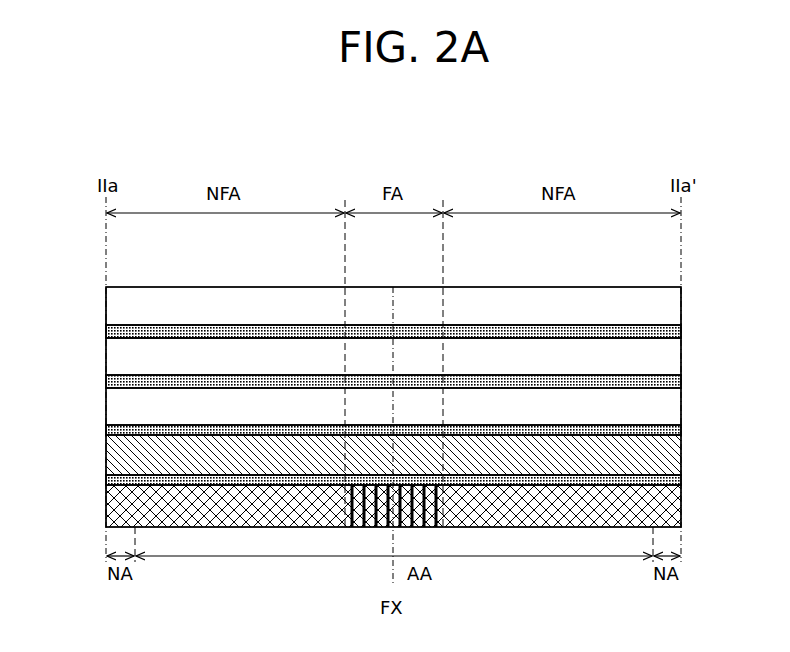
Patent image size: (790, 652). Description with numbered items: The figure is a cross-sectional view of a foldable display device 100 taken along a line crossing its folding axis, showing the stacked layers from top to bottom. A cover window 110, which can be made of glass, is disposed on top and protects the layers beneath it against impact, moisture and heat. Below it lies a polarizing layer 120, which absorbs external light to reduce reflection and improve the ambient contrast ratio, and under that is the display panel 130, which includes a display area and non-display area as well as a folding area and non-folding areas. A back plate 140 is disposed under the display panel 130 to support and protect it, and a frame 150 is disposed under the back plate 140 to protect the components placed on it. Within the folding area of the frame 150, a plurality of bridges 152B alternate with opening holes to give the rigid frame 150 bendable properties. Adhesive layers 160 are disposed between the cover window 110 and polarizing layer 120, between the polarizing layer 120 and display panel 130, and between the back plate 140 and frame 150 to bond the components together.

The foldable display device 100 is at (683, 132).
The cover window 110 is at (668, 307).
The polarizing layer 120 is at (668, 357).
The display panel 130 is at (668, 407).
The back plate 140 is at (668, 458).
The frame 150 is at (668, 512).
The bridges 152B is at (370, 517).
The adhesive layers 160 is at (106, 333).